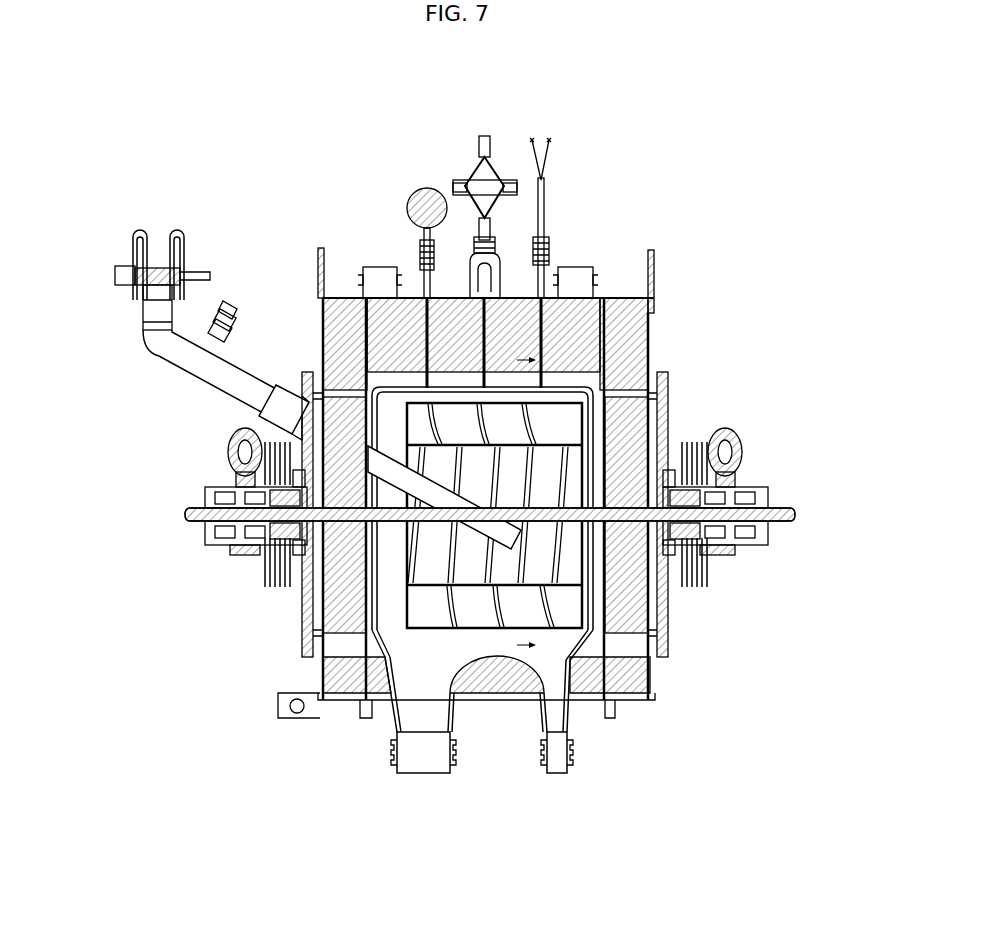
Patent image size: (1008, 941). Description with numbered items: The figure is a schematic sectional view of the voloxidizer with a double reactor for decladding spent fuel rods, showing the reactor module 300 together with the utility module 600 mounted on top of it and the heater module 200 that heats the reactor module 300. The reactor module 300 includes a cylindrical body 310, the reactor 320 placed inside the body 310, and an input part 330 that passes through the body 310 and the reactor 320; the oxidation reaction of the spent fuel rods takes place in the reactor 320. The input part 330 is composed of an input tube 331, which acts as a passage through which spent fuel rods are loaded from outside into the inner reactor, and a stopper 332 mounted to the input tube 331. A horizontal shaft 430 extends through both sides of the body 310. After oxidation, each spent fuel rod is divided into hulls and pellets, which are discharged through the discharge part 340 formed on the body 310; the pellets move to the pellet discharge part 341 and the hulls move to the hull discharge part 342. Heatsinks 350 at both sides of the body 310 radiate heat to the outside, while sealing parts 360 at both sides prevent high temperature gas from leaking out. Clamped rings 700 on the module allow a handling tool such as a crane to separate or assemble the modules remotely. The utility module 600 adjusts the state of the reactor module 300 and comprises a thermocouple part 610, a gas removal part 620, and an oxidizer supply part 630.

The heater module 200 is at (672, 261).
The reactor module 300 is at (738, 396).
The cylindrical body 310 is at (622, 358).
The reactor 320 is at (620, 690).
The input part 330 is at (130, 345).
The input tube 331 is at (205, 372).
The stopper 332 is at (162, 262).
The discharge part 340 is at (568, 860).
The pellet discharge part 341 is at (430, 778).
The hull discharge part 342 is at (553, 778).
The heatsink 350 is at (700, 592).
The sealing part 360 is at (740, 548).
The rotary shaft 430 is at (795, 505).
The utility module 600 is at (556, 69).
The thermocouple part 610 is at (540, 136).
The gas removal part 620 is at (484, 136).
The oxidizer supply part 630 is at (425, 188).
The clamped ring 700 is at (738, 436).